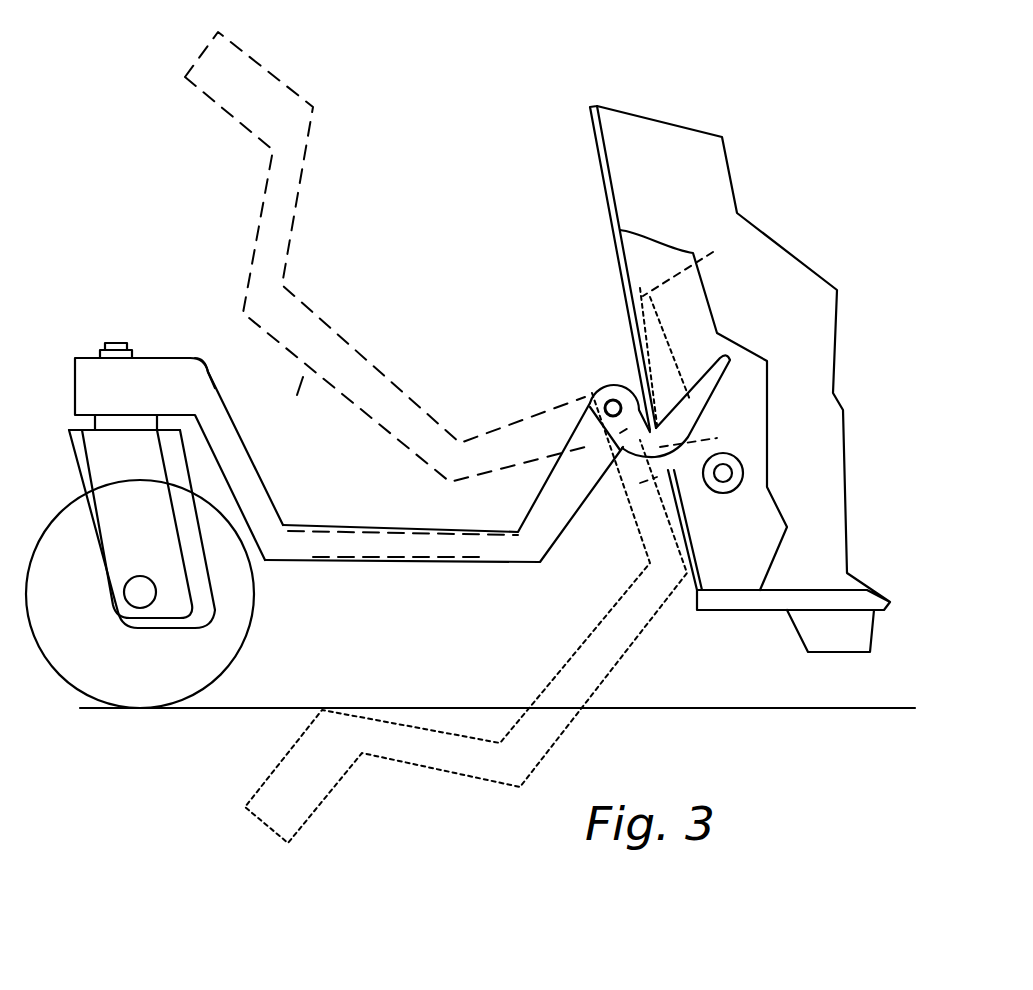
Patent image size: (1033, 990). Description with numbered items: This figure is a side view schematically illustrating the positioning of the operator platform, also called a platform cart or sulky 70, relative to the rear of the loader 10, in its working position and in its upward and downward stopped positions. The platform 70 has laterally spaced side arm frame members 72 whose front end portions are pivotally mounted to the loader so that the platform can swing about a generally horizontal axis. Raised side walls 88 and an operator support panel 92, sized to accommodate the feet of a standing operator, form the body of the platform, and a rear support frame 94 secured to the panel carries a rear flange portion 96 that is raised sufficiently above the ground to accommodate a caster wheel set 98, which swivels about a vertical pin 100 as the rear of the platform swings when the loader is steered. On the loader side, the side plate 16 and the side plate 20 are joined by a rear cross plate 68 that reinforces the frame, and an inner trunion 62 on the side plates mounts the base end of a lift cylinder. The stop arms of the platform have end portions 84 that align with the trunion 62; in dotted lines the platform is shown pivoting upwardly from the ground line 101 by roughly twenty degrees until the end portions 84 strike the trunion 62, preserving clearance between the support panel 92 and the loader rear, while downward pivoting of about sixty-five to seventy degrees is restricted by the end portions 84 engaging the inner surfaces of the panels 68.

The loader 10 is at (560, 134).
The side plate 16 is at (697, 323).
The side plate 20 is at (710, 160).
The inner trunion 62 is at (713, 492).
The rear cross plate 68 is at (608, 163).
The operator platform 70 is at (300, 212).
The side arm frame members 72 is at (292, 407).
The end portions of stop arms 84 is at (713, 252).
The side walls 88 is at (402, 338).
The operator support panel 92 is at (422, 538).
The rear support frame 94 is at (207, 387).
The rear flange portion 96 is at (152, 380).
The caster wheel set 98 is at (218, 647).
The vertical pin 100 is at (110, 340).
The ground line 101 is at (373, 707).